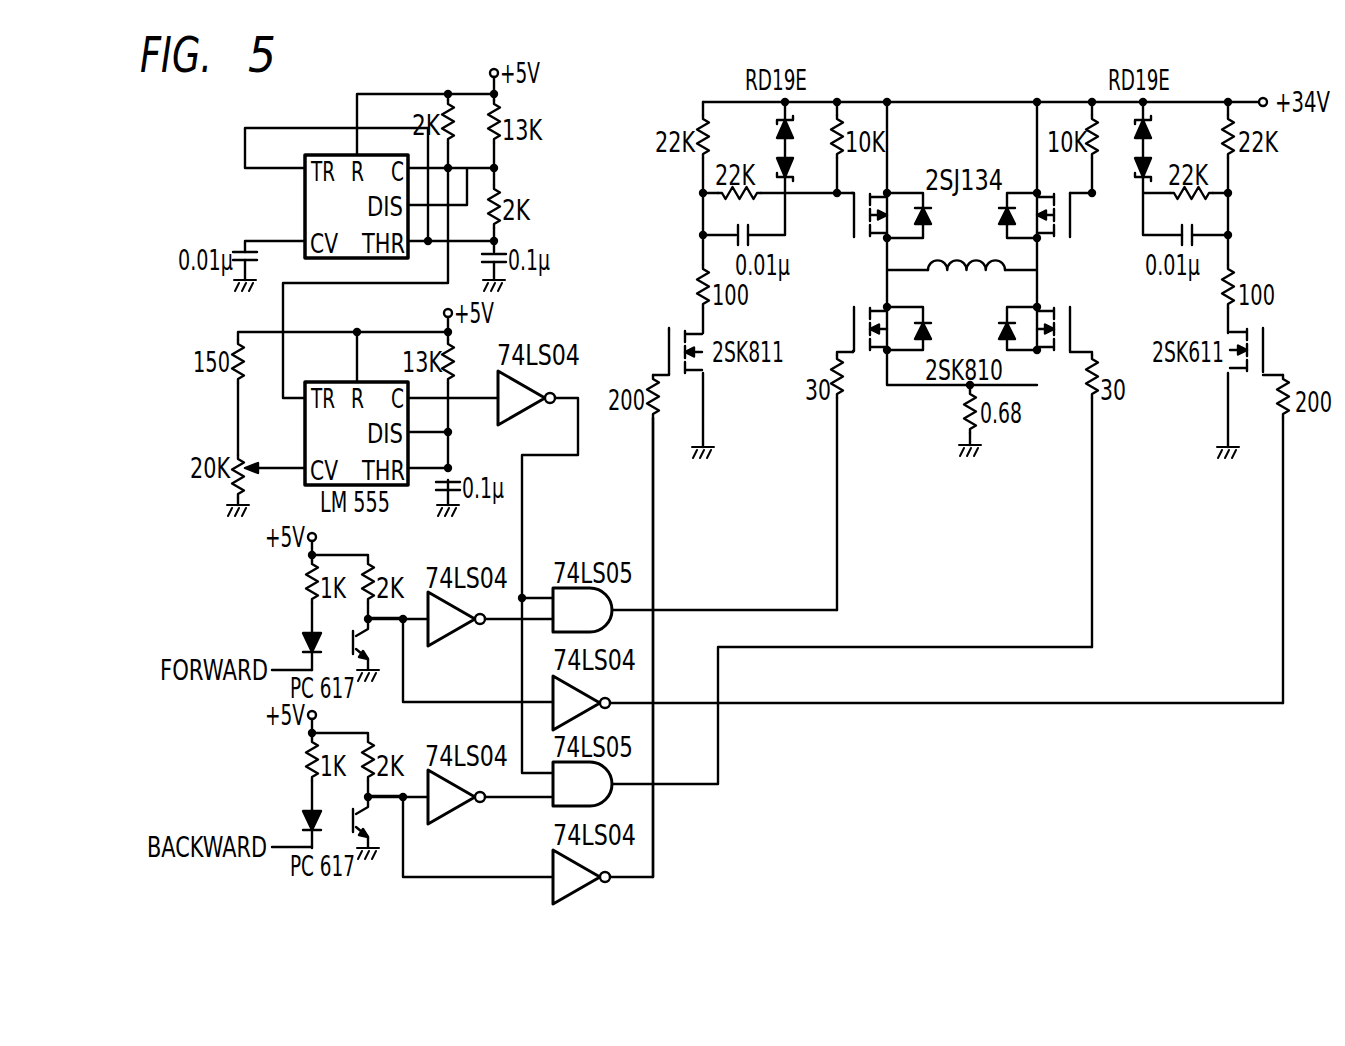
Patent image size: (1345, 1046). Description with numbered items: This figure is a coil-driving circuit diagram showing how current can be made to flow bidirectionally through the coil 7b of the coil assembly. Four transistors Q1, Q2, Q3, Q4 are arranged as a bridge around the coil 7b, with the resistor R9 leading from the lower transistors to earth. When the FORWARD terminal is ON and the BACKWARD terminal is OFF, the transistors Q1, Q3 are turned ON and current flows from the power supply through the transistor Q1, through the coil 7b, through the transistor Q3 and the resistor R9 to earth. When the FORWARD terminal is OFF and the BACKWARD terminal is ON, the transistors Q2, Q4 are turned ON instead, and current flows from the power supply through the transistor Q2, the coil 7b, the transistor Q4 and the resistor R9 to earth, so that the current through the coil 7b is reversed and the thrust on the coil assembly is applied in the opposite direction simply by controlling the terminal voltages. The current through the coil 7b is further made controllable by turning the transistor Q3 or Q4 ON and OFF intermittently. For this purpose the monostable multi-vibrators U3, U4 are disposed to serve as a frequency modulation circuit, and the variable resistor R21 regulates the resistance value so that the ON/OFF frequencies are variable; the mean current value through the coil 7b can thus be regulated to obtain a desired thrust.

The coil 7b is at (966, 248).
The variable resistor R21 is at (241, 465).
The resistor R9 is at (948, 418).
The transistor Q1 is at (1052, 215).
The transistor Q2 is at (875, 215).
The transistor Q3 is at (875, 328).
The transistor Q4 is at (1052, 328).
The monostable multi-vibrator U3 is at (339, 434).
The monostable multi-vibrator U4 is at (339, 207).